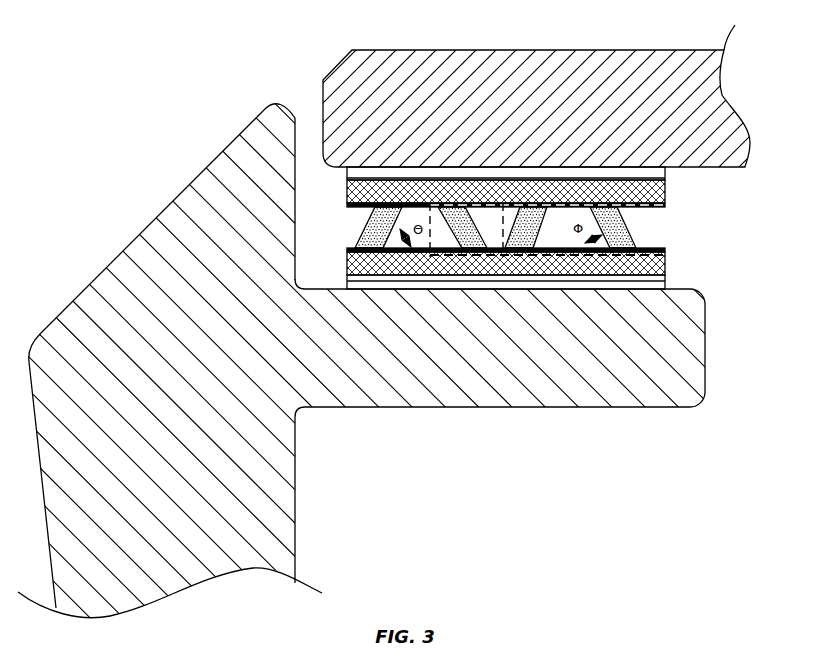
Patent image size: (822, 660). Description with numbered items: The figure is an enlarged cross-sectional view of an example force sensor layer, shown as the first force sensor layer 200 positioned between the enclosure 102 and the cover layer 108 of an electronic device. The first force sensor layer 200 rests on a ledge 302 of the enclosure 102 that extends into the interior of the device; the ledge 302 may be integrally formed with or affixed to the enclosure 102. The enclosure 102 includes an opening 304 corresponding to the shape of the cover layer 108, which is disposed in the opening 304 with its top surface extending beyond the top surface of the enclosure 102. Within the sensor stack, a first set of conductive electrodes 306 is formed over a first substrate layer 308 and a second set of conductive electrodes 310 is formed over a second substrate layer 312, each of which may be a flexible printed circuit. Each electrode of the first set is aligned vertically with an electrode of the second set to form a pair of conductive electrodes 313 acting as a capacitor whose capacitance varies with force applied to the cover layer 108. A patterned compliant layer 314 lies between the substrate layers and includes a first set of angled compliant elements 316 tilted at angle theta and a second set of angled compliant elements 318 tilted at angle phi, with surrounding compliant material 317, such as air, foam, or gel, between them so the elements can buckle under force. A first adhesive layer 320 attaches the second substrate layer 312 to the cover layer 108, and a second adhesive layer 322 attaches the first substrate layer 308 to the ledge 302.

The enclosure 102 is at (270, 106).
The cover layer 108 is at (525, 49).
The first force sensor layer 200 is at (542, 228).
The ledge 302 is at (323, 288).
The opening 304 is at (305, 91).
The first set of conductive electrodes 306 is at (670, 250).
The first substrate layer 308 is at (667, 268).
The second set of conductive electrodes 310 is at (670, 205).
The second substrate layer 312 is at (667, 192).
The pair of conductive electrodes 313 is at (432, 203).
The patterned compliant layer 314 is at (672, 229).
The first set of angled compliant elements 316 is at (364, 225).
The surrounding compliant material 317 is at (362, 217).
The second set of angled compliant elements 318 is at (627, 228).
The first adhesive layer 320 is at (667, 178).
The second adhesive layer 322 is at (533, 279).